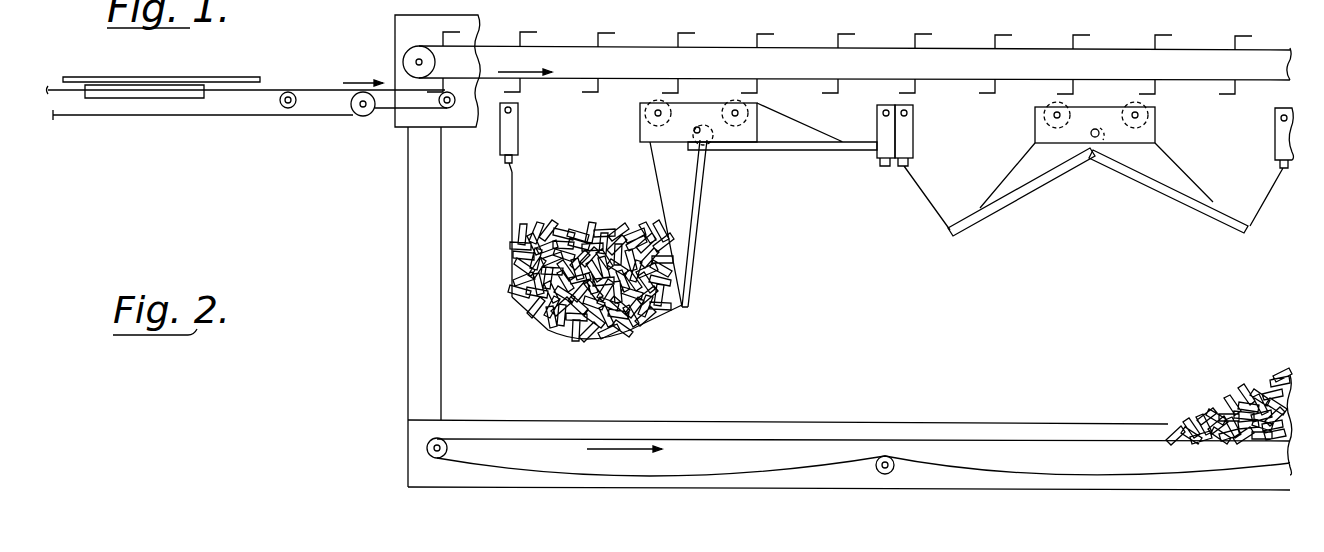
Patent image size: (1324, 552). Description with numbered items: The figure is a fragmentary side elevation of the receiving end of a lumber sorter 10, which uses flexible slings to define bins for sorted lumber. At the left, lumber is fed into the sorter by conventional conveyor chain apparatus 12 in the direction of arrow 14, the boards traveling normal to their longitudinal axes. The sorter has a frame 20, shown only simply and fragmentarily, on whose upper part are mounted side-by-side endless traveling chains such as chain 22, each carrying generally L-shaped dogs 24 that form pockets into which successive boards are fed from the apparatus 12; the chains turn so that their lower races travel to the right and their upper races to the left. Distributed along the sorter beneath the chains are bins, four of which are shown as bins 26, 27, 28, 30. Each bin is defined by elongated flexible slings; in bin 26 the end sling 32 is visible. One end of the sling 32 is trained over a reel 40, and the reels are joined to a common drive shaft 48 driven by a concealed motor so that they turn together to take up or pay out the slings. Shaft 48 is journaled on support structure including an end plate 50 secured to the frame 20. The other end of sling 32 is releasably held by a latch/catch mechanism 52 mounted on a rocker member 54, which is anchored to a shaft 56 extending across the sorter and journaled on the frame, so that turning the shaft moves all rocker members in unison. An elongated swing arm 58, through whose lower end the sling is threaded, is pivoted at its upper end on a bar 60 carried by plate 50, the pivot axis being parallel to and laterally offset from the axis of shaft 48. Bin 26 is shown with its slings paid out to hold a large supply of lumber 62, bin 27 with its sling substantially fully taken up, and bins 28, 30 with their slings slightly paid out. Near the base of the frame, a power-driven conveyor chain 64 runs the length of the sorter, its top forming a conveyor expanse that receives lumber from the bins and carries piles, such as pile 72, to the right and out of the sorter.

The lumber sorter 10 is at (387, 188).
The conveyor chain apparatus 12 is at (212, 150).
The arrow 14 is at (253, 58).
The frame 20 is at (408, 265).
The chain 22 is at (500, 45).
The dogs 24 is at (598, 33).
The bin 26 is at (545, 200).
The bin 27 is at (805, 97).
The bin 28 is at (953, 103).
The bin 30 is at (1190, 110).
The sling 32 is at (512, 222).
The reel 40 is at (668, 100).
The drive shaft 48 is at (656, 116).
The plate 50 is at (728, 132).
The latch/catch mechanism 52 is at (522, 168).
The rocker member 54 is at (518, 140).
The shaft 56 is at (511, 111).
The swing arm 58 is at (698, 212).
The bar 60 is at (695, 132).
The supply of lumber 62 is at (628, 218).
The conveyor chain 64 is at (614, 438).
The pile of lumber 72 is at (1220, 392).